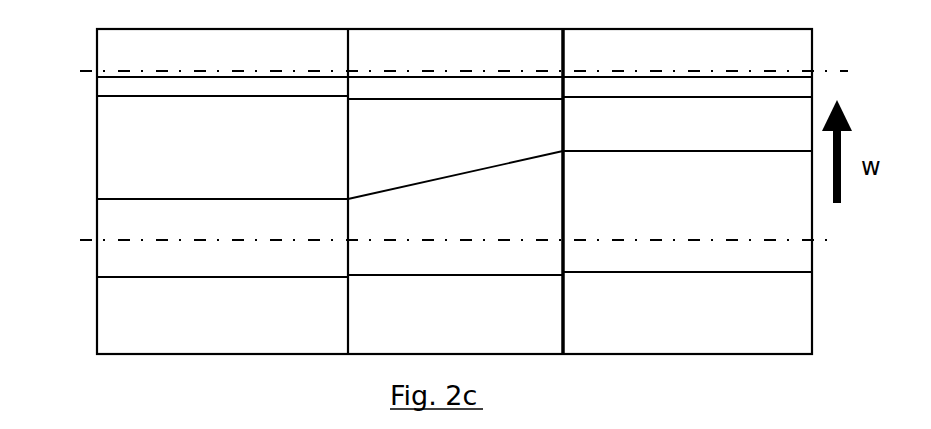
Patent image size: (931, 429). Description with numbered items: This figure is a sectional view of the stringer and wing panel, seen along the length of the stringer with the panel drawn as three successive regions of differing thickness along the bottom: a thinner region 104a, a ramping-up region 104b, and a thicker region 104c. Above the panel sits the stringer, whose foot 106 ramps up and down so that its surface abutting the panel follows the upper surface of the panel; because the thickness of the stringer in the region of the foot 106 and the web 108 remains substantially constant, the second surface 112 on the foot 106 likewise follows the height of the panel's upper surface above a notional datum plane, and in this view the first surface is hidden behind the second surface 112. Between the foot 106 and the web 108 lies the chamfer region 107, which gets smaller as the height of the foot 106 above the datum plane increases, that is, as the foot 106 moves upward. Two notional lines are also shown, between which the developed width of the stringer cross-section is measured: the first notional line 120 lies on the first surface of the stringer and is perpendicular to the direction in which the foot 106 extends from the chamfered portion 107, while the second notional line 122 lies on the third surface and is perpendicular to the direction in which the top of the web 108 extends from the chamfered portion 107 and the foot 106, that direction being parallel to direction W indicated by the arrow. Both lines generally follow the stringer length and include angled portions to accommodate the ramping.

The web 108 is at (123, 88).
The chamfer region 107 is at (108, 148).
The foot 106 is at (118, 258).
The second notional line 122 is at (610, 71).
The first notional line 120 is at (685, 236).
The second surface 112 is at (664, 204).
The thinner region 104a is at (256, 328).
The ramping-up region 104b is at (492, 327).
The thicker region 104c is at (732, 326).